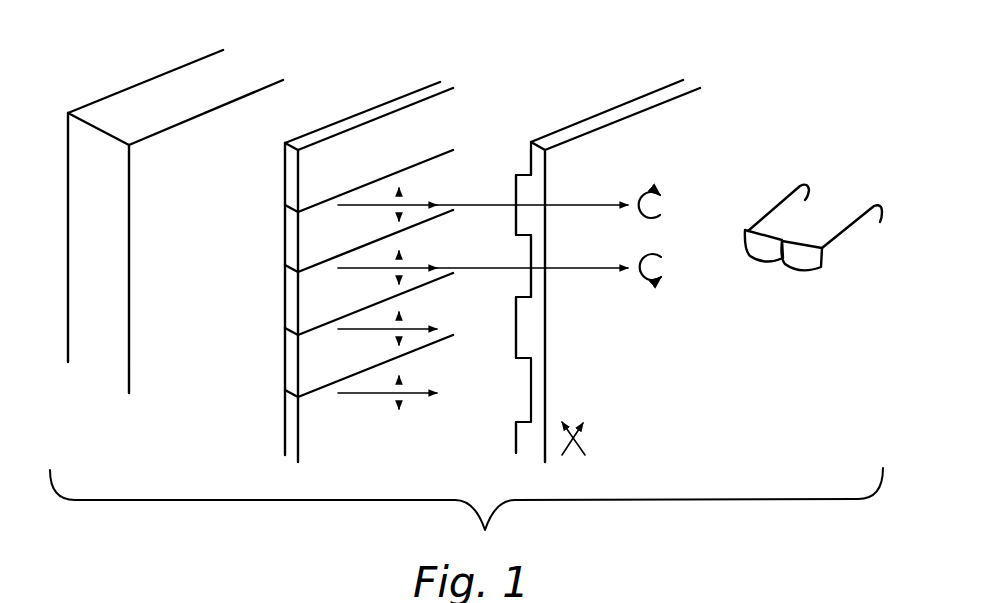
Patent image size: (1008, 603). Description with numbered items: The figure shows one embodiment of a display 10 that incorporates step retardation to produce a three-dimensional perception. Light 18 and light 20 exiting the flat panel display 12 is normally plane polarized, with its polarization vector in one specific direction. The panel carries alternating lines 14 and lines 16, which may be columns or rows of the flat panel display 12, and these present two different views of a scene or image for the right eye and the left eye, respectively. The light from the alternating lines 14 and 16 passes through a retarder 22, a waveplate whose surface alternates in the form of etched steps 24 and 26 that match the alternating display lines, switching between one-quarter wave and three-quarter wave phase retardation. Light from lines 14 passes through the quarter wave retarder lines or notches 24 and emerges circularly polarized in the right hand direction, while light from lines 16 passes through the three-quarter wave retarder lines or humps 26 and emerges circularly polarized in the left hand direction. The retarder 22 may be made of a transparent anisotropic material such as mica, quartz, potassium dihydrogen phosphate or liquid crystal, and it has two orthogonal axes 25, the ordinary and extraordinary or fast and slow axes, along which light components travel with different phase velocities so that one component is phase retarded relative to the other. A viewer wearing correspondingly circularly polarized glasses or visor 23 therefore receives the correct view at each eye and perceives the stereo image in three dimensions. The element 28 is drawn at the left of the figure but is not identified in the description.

The display 10 is at (712, 24).
The flat panel display 12 is at (410, 92).
The alternating lines 14 is at (342, 182).
The alternating lines 16 is at (342, 245).
The light 18 is at (413, 268).
The light 20 is at (413, 205).
The retarder 22 is at (693, 90).
The circularly polarized glasses 23 is at (778, 200).
The quarter wave retarder lines 24 is at (528, 148).
The orthogonal axes 25 is at (575, 440).
The three-quarter wave retarder lines 26 is at (516, 180).
The light source block 28 is at (267, 88).